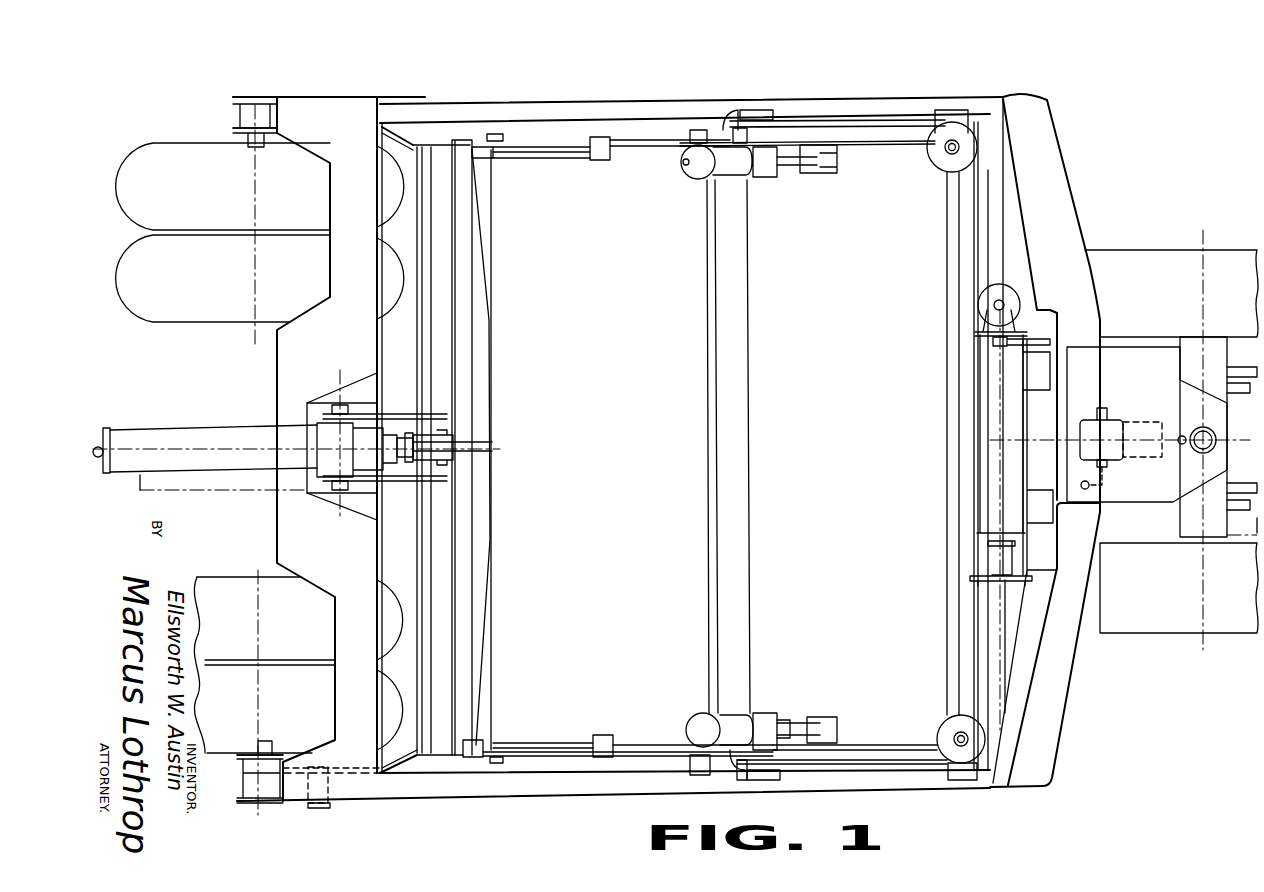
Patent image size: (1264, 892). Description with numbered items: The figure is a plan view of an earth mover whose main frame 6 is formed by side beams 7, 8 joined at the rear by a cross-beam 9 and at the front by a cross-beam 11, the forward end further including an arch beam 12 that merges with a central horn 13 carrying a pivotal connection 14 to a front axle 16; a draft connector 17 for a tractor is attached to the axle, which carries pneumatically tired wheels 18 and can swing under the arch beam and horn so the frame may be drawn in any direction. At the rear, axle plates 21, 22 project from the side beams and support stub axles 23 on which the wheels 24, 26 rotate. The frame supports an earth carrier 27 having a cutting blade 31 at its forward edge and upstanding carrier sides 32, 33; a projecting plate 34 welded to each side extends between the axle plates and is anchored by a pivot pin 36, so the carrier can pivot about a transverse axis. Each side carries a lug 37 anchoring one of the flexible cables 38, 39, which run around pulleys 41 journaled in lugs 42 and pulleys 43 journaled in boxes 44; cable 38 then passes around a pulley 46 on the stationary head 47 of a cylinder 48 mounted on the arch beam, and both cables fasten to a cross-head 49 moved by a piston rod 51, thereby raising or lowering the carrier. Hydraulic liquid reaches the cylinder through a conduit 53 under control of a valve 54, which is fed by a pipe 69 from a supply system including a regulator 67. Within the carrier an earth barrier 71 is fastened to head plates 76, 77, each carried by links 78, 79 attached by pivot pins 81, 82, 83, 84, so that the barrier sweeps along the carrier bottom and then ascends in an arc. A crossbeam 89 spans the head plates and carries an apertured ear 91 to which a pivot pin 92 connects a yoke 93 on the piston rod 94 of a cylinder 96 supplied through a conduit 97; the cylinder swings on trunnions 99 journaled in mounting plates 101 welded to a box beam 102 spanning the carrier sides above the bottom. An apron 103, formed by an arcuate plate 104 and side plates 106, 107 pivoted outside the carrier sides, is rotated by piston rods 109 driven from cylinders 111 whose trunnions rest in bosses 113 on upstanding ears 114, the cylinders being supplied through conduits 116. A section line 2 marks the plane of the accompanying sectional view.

The section line 2 is at (691, 505).
The main frame 6 is at (1083, 676).
The side beam 7 is at (605, 104).
The side beam 8 is at (581, 783).
The cross-beam 9 is at (277, 384).
The cross-beam 11 is at (960, 237).
The arch beam 12 is at (1060, 183).
The central horn 13 is at (1145, 377).
The pivotal connection 14 is at (1194, 430).
The front axle 16 is at (1222, 353).
The draft connector 17 is at (1235, 388).
The pneumatically tired wheels 18 is at (1170, 250).
The axle plate 21 is at (233, 101).
The axle plate 22 is at (233, 129).
The stub axles 23 is at (252, 147).
The pneumatically tired wheel 24 is at (168, 144).
The pneumatically tired wheel 26 is at (160, 323).
The earth carrier 27 is at (623, 419).
The cutting blade 31 is at (740, 560).
The carrier side 32 is at (566, 153).
The carrier side 33 is at (562, 743).
The projecting plate 34 is at (408, 130).
The pivot pin 36 is at (311, 808).
The projecting lug 37 is at (728, 128).
The flexible cable 38 is at (1024, 430).
The flexible cable 39 is at (858, 146).
The pulleys 41 is at (737, 110).
The lugs 42 is at (757, 110).
The pulleys 43 is at (936, 163).
The boxes 44 is at (935, 112).
The pulley 46 is at (985, 298).
The stationary head 47 is at (975, 333).
The cylinder 48 is at (983, 367).
The cross-head 49 is at (975, 581).
The piston rod 51 is at (992, 549).
The conduit 53 is at (1040, 337).
The valve 54 is at (1115, 425).
The regulator 67 is at (1145, 457).
The pipe 69 is at (1106, 470).
The earth barrier 71 is at (491, 645).
The head plate 76 is at (528, 159).
The head plate 77 is at (536, 744).
The link 78 is at (650, 147).
The link 79 is at (473, 140).
The pivot pin 81 is at (601, 161).
The pivot pin 82 is at (695, 130).
The pivot pin 83 is at (490, 158).
The pivot pin 84 is at (500, 134).
The crossbeam 89 is at (483, 497).
The apertured ear 91 is at (480, 446).
The pivot pin 92 is at (455, 430).
The yoke 93 is at (410, 432).
The piston rod 94 is at (405, 458).
The cylinder 96 is at (160, 431).
The conduit 97 is at (107, 428).
The trunnions 99 is at (358, 403).
The mounting plates 101 is at (375, 415).
The box beam 102 is at (435, 600).
The apron 103 is at (819, 419).
The arcuate plate 104 is at (947, 627).
The apron side plate 106 is at (888, 128).
The apron side plate 107 is at (893, 747).
The piston rods 109 is at (786, 166).
The cylinder 111 is at (708, 176).
The boss 113 is at (762, 740).
The upstanding ear 114 is at (792, 745).
The conduit 116 is at (694, 162).